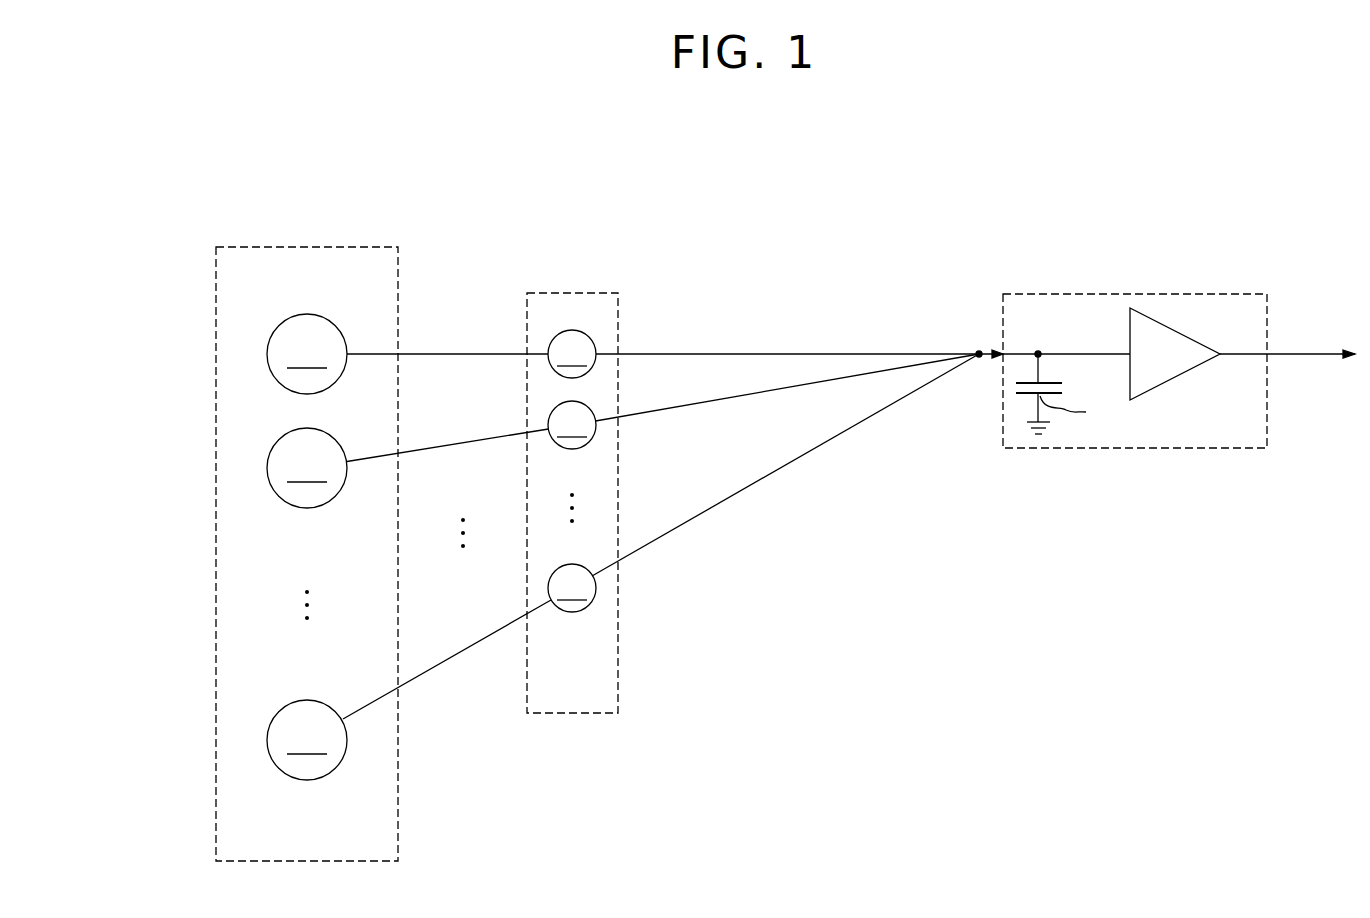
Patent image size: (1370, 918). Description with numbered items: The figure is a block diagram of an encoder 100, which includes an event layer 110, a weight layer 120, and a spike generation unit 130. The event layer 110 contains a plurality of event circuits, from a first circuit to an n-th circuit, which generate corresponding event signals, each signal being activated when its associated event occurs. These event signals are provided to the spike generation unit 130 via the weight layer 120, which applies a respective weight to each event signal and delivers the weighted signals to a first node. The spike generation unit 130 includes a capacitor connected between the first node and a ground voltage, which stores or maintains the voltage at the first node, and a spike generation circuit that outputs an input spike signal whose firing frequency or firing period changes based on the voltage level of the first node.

The encoder 100 is at (1285, 168).
The event layer 110 is at (348, 247).
The weight layer 120 is at (572, 293).
The spike generation unit 130 is at (1220, 294).